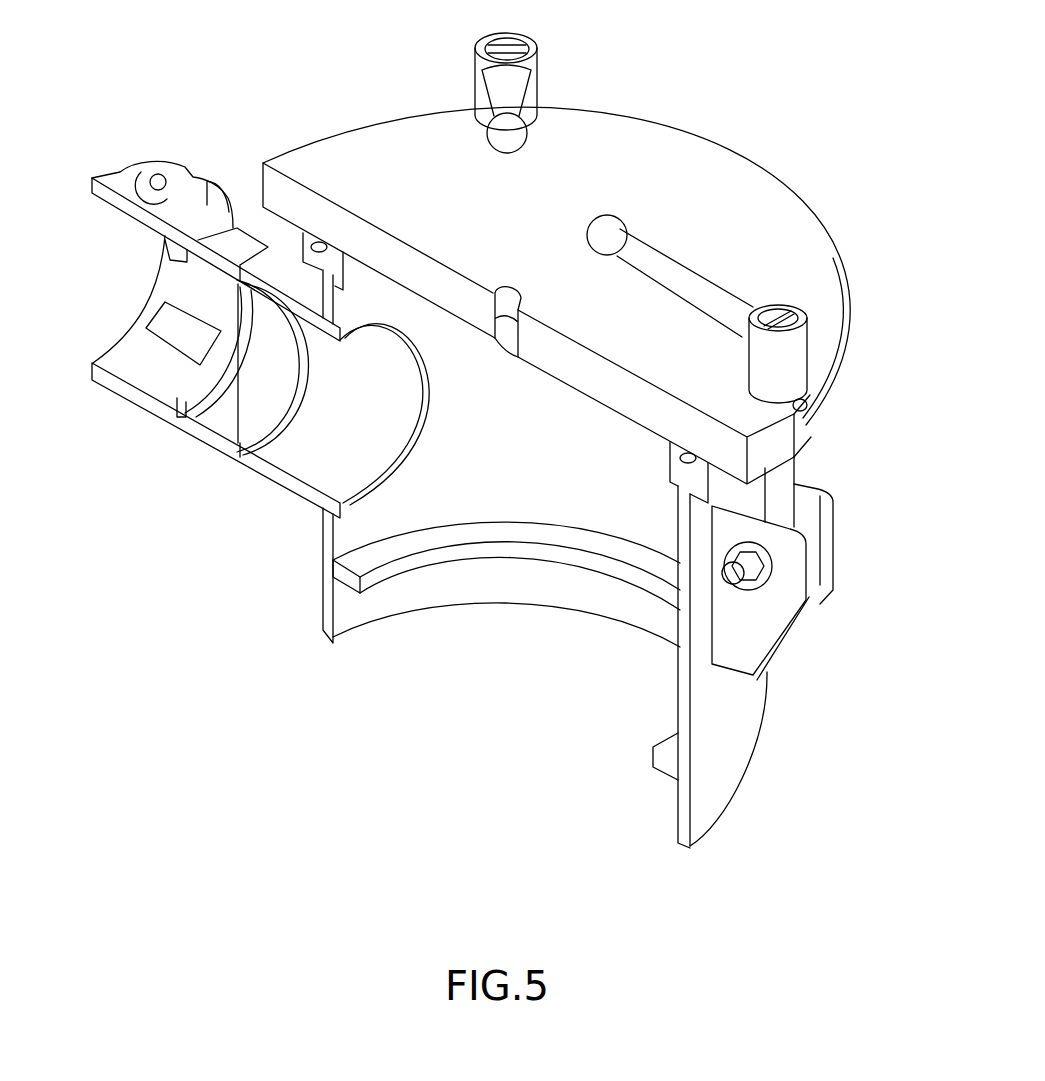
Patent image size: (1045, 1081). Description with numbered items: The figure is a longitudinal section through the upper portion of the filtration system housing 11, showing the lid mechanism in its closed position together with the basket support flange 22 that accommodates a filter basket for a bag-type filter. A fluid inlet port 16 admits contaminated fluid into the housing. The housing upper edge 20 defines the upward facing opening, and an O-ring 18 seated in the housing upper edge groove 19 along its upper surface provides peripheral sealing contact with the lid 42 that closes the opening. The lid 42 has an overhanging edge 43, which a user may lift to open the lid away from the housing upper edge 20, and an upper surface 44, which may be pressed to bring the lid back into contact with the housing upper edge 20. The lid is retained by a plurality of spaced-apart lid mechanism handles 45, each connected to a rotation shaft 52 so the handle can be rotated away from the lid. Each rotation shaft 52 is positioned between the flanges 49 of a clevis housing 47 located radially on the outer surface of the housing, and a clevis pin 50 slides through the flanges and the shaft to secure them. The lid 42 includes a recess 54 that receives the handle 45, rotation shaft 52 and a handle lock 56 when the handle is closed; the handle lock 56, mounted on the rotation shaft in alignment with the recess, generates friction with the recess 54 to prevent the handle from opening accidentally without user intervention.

The filtration system housing 11 is at (730, 772).
The fluid inlet port 16 is at (150, 296).
The O-ring 18 is at (313, 245).
The housing upper edge groove 19 is at (270, 248).
The housing upper edge 20 is at (667, 465).
The basket support flange 22 is at (345, 578).
The lid 42 is at (592, 265).
The overhanging edge 43 is at (853, 342).
The upper surface 44 is at (655, 182).
The lid mechanism handle 45 is at (478, 88).
The clevis housing 47 is at (808, 628).
The flanges 49 is at (836, 510).
The clevis pin 50 is at (745, 590).
The rotation shaft 52 is at (796, 470).
The recess 54 is at (815, 418).
The handle lock 56 is at (808, 405).